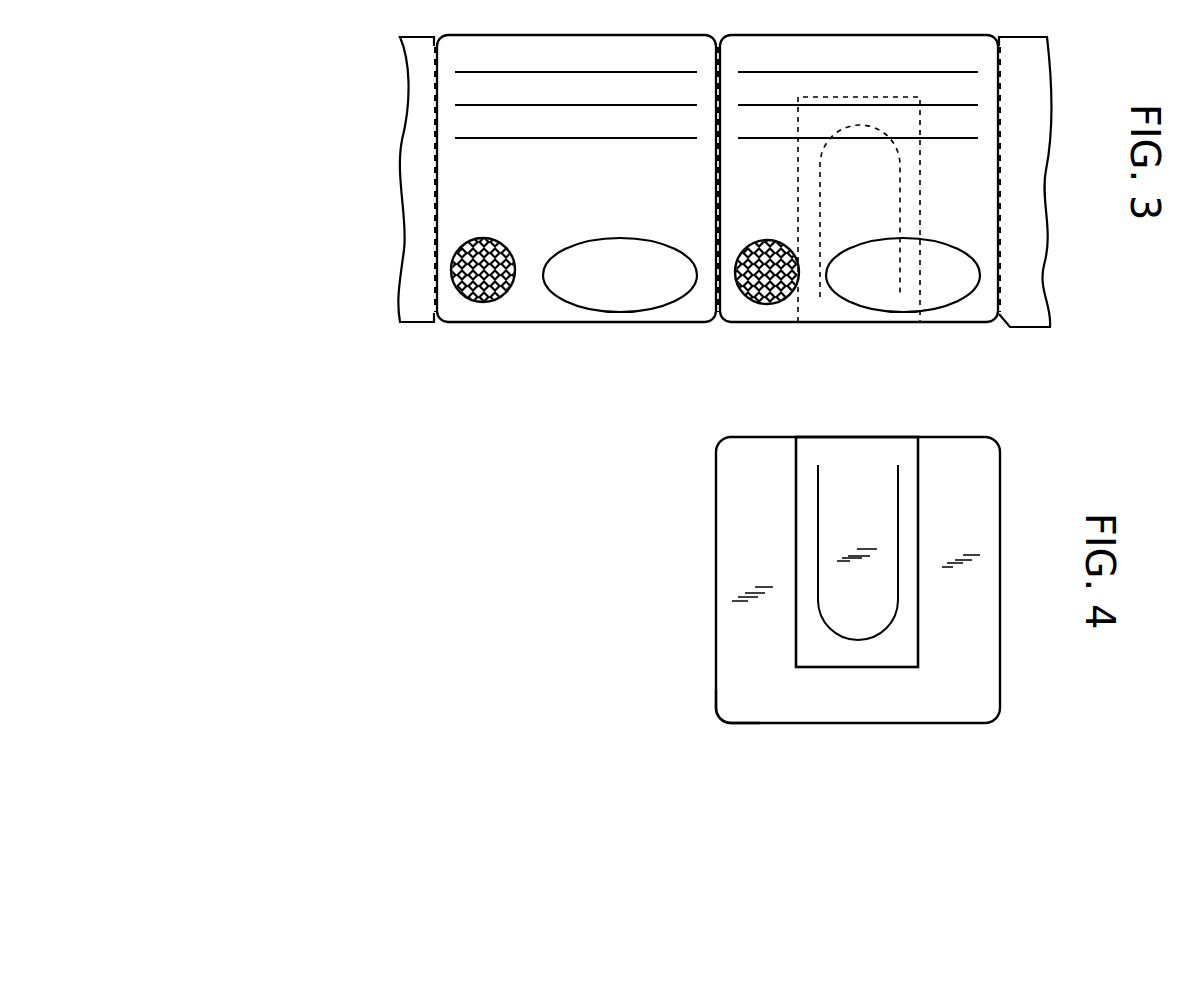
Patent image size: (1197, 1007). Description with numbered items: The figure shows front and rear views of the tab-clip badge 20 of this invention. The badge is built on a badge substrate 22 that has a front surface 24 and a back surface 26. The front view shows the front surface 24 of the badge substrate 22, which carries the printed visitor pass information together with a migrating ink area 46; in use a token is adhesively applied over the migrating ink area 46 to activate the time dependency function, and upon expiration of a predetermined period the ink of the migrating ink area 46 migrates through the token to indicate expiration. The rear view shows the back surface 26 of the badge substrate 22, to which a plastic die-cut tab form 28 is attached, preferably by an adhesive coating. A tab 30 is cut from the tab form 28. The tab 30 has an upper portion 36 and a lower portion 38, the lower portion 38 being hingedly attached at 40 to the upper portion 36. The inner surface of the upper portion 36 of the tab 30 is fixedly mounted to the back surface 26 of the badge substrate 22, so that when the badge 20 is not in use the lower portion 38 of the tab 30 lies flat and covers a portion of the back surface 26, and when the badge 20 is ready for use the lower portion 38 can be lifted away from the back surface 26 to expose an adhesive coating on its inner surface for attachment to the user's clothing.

In FIG. 3, the tab-clip badge 20 is at (605, 326).
In FIG. 3, the front surface 24 is at (483, 155).
In FIG. 3, the migrating ink area 46 is at (487, 273).
In FIG. 4, the badge substrate 22 is at (730, 567).
In FIG. 4, the back surface 26 is at (747, 665).
In FIG. 4, the plastic die-cut tab form 28 is at (885, 466).
In FIG. 4, the tab 30 is at (862, 577).
In FIG. 4, the upper portion 36 is at (843, 470).
In FIG. 4, the lower portion 38 is at (882, 593).
In FIG. 4, the hinge 40 is at (883, 465).